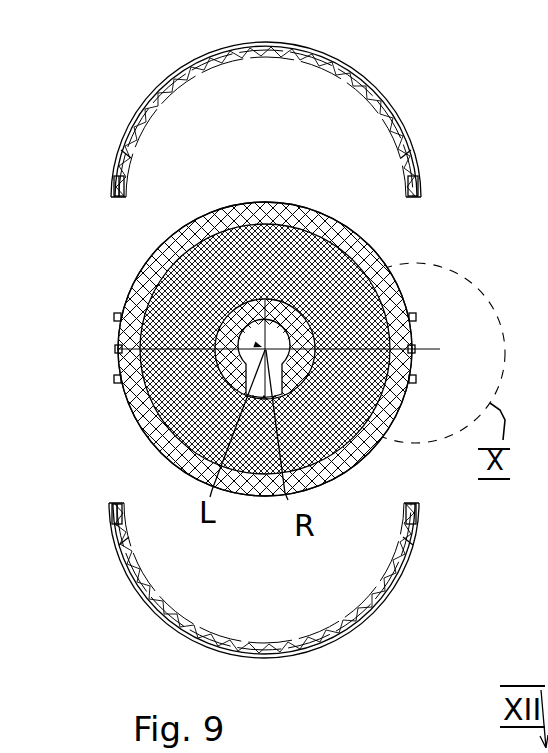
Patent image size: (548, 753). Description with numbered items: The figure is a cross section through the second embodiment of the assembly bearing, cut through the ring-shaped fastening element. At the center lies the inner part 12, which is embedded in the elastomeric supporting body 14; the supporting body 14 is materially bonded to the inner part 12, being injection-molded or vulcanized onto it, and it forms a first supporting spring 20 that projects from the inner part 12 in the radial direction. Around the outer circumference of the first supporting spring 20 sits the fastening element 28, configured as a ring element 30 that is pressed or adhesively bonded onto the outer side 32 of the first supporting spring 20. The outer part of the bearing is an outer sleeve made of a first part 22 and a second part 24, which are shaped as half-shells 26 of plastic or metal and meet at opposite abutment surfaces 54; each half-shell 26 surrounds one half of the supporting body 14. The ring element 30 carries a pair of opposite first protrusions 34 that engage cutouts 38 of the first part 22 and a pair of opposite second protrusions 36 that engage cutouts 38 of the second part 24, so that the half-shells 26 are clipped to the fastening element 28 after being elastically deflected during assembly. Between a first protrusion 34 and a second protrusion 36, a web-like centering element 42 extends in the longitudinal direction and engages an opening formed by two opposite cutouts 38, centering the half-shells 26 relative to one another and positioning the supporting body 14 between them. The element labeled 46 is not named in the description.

The inner part 12 is at (262, 347).
The elastomeric supporting body 14 is at (200, 273).
The first supporting spring 20 is at (249, 232).
The first part 22 is at (372, 88).
The second part 24 is at (375, 595).
The half-shells 26 is at (301, 50).
The fastening element 28 is at (277, 210).
The ring element 30 is at (320, 228).
The outer side 32 is at (357, 254).
The first protrusions 34 is at (114, 318).
The second protrusions 36 is at (114, 379).
The cutouts 38 is at (120, 150).
The centering element 42 is at (115, 349).
The end piece 46 is at (113, 176).
The abutment surfaces 54 is at (125, 200).